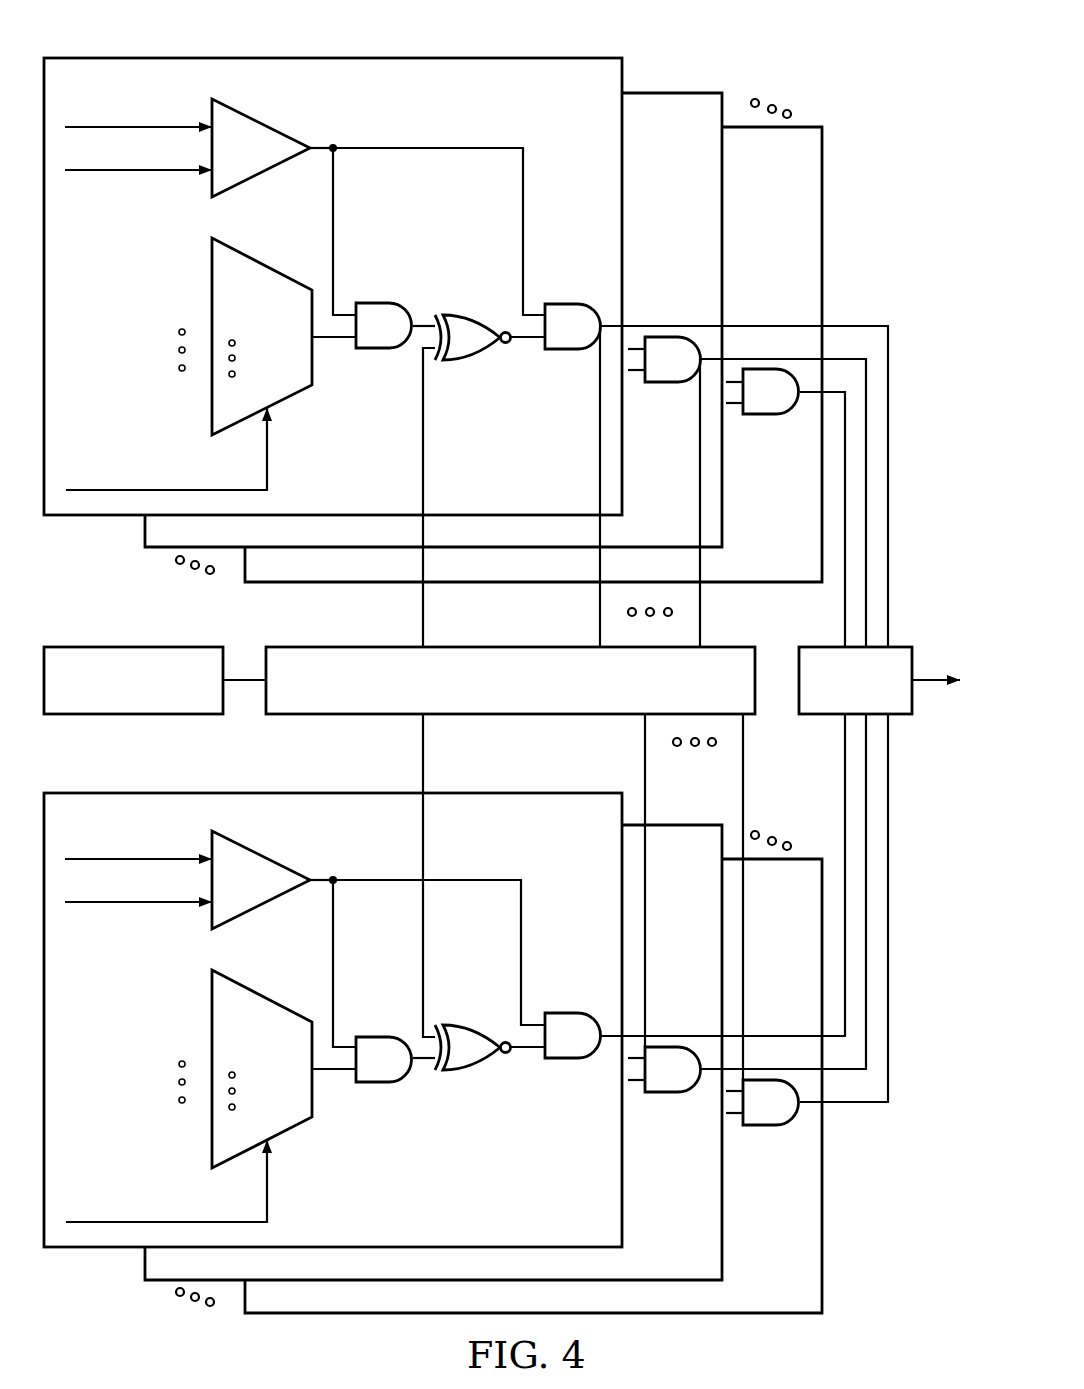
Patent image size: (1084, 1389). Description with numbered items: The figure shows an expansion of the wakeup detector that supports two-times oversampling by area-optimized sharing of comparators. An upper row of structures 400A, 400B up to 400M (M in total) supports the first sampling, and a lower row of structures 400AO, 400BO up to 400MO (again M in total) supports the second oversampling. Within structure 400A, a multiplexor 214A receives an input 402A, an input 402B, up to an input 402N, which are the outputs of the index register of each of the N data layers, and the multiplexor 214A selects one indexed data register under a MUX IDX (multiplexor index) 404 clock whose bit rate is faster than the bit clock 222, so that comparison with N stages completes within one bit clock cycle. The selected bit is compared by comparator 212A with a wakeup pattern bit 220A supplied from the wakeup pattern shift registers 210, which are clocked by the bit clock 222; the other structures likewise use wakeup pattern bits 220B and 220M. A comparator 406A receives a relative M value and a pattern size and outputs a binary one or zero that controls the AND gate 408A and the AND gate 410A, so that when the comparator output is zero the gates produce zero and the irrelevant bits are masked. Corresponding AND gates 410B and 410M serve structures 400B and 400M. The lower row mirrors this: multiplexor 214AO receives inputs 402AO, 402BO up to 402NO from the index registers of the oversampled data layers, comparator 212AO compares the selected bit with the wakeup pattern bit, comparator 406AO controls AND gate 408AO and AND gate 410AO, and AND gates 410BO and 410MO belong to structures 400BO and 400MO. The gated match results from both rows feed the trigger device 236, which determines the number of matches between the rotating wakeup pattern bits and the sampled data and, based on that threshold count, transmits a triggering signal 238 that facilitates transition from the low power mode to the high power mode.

The structure 400A is at (570, 57).
The structure 400B is at (672, 92).
The structure 400M is at (826, 233).
The comparator 406A is at (285, 103).
The multiplexor 214A is at (285, 240).
The input 402A is at (212, 269).
The input 402B is at (212, 300).
The input 402N is at (212, 403).
The MUX IDX (multiplexor index) 404 is at (100, 490).
The AND gate 408A is at (370, 302).
The comparator 212A is at (462, 314).
The AND gate 410A is at (558, 303).
The AND gate 410B is at (660, 383).
The AND gate 410M is at (760, 416).
The wakeup pattern bit 220A is at (421, 622).
The wakeup pattern bit 220B is at (598, 622).
The wakeup pattern bit 220M is at (702, 618).
The bit clock 222 is at (133, 718).
The wakeup pattern shift registers 210 is at (296, 718).
The trigger device 236 is at (915, 698).
The triggering signal 238 is at (927, 678).
The structure 400AO is at (478, 790).
The structure 400BO is at (668, 822).
The structure 400MO is at (826, 1205).
The comparator 406AO is at (290, 838).
The multiplexor 214AO is at (285, 973).
The input 402AO is at (212, 1001).
The input 402BO is at (212, 1032).
The input 402NO is at (212, 1136).
The AND gate 408AO is at (373, 1083).
The comparator 212AO is at (462, 1072).
The AND gate 410AO is at (563, 1061).
The AND gate 410BO is at (660, 1094).
The AND gate 410MO is at (760, 1128).